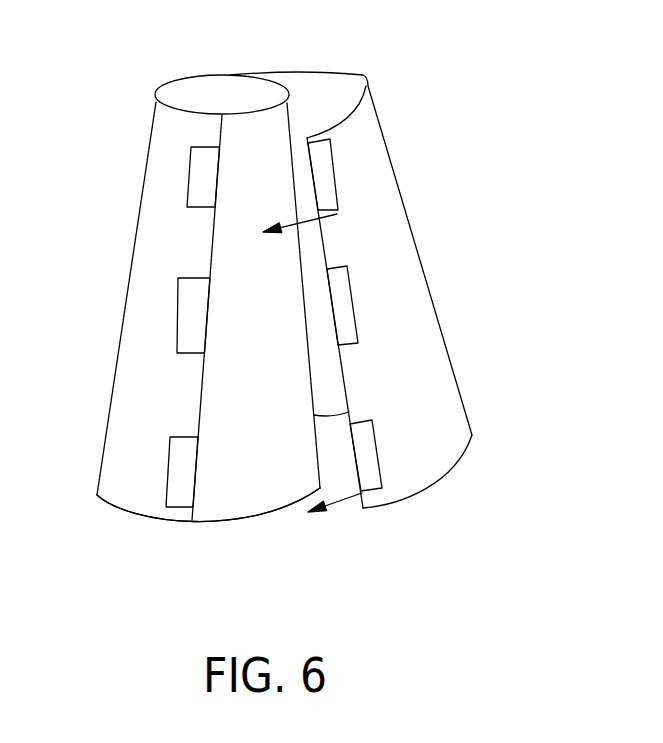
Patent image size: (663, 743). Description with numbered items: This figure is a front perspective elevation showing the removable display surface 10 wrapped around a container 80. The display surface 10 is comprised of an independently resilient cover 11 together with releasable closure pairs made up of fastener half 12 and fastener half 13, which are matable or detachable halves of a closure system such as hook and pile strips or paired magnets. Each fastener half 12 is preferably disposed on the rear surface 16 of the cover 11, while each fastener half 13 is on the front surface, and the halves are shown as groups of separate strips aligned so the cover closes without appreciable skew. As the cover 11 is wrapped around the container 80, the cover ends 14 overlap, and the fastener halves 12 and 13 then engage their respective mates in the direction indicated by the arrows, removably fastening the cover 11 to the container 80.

The removable display surface 10 is at (378, 59).
The independently resilient cover 11 is at (450, 470).
The fastener half 12 is at (336, 193).
The fastener half 13 is at (213, 208).
The cover end 14 is at (208, 264).
The rear surface 16 is at (338, 113).
The container 80 is at (213, 522).